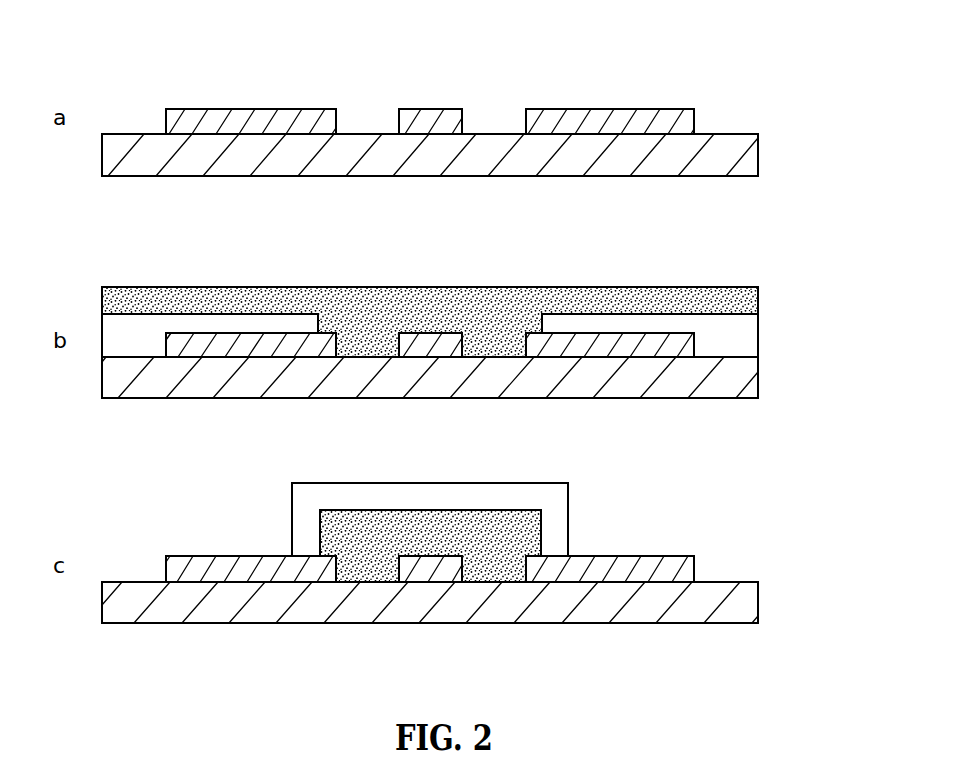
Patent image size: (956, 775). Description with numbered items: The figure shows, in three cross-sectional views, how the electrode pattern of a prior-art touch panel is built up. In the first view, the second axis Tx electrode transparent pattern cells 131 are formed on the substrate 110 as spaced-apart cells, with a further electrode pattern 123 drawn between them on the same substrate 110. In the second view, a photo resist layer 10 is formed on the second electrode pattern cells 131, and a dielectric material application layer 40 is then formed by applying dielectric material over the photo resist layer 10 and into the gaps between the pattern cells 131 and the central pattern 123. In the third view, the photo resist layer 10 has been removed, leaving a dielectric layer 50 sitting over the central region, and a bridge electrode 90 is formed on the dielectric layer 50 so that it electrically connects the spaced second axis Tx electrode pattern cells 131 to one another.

The substrate 110 is at (753, 150).
The second axis Tx electrode transparent pattern cell 131 is at (265, 117).
The auxiliary electrode 123 is at (428, 117).
The photo resist layer 10 is at (743, 337).
The dielectric material application layer 40 is at (493, 292).
The dielectric layer 50 is at (498, 527).
The bridge electrode 90 is at (359, 497).